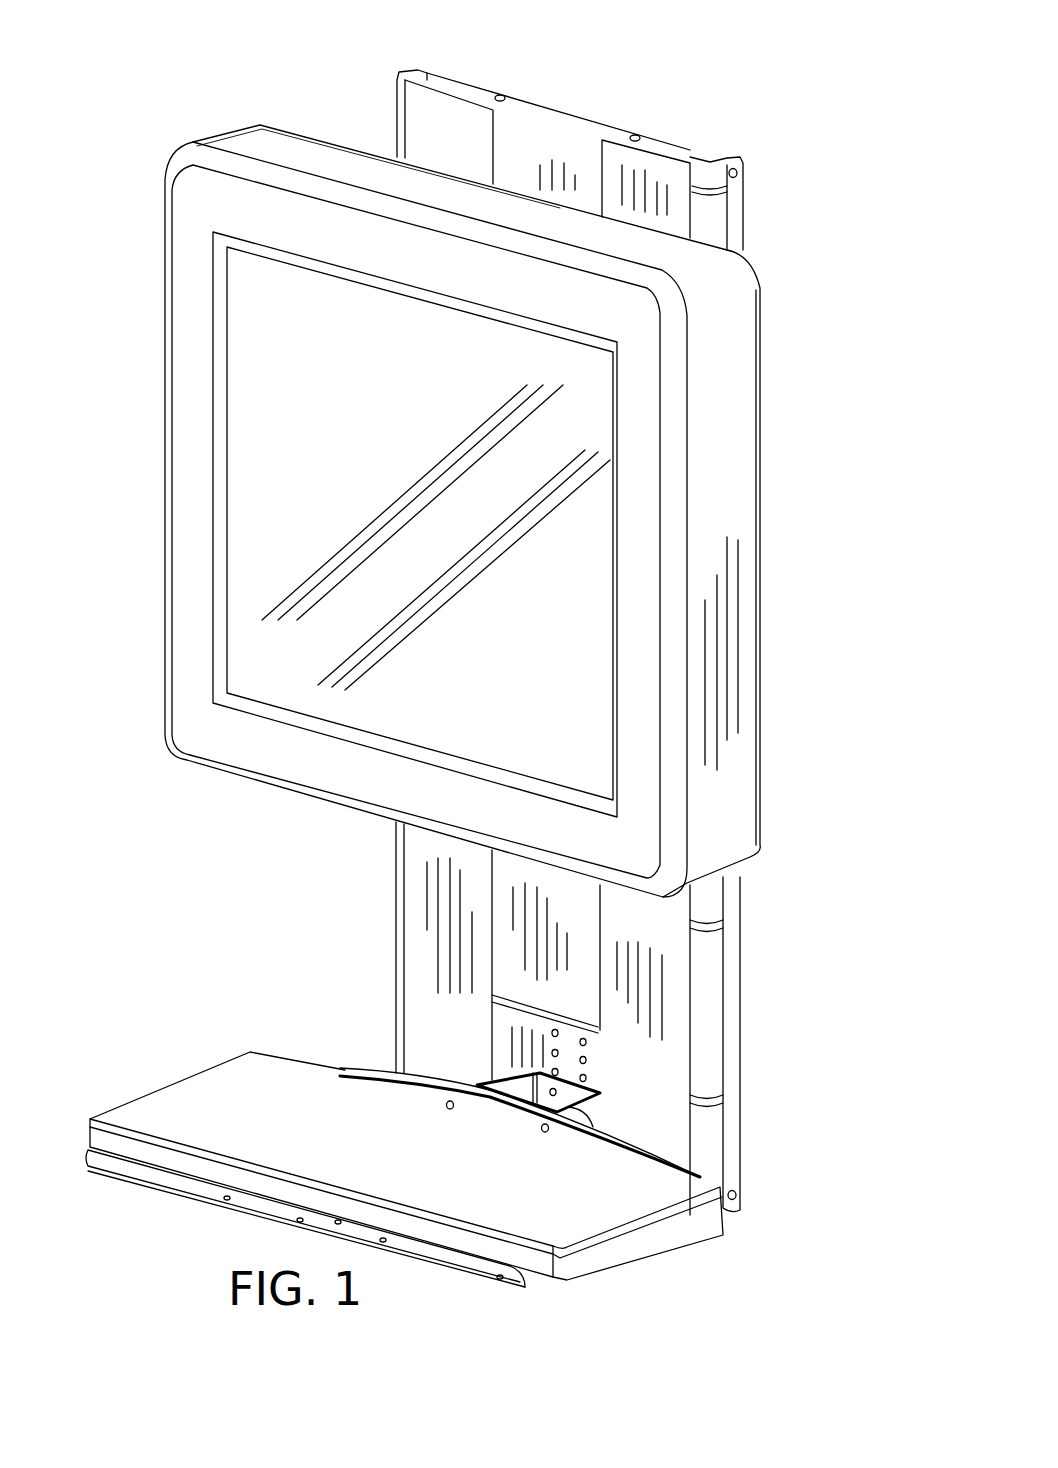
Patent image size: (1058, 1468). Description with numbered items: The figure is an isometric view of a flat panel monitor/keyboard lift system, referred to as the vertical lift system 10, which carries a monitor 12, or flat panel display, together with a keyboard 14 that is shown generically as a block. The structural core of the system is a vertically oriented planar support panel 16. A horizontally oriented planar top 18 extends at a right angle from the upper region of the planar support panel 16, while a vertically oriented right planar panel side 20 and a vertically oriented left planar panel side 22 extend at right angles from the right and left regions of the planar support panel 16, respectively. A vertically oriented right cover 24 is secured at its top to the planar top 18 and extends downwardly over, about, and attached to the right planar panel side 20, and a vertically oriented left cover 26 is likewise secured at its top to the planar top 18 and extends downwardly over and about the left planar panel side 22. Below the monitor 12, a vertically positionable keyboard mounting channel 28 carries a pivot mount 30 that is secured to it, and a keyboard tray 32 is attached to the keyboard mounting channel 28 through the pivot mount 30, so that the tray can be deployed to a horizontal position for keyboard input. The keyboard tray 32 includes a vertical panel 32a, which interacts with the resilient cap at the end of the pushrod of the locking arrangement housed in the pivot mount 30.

The vertical lift system 10 is at (822, 108).
The monitor 12 is at (723, 400).
The keyboard 14 is at (560, 1225).
The planar support panel 16 is at (546, 171).
The planar top 18 is at (547, 115).
The right planar panel side 20 is at (735, 212).
The left planar panel side 22 is at (413, 120).
The right cover 24 is at (625, 160).
The left cover 26 is at (450, 120).
The keyboard mounting channel 28 is at (517, 1042).
The pivot mount 30 is at (560, 1100).
The keyboard tray 32 is at (130, 1182).
The vertical panel 32a is at (383, 1078).